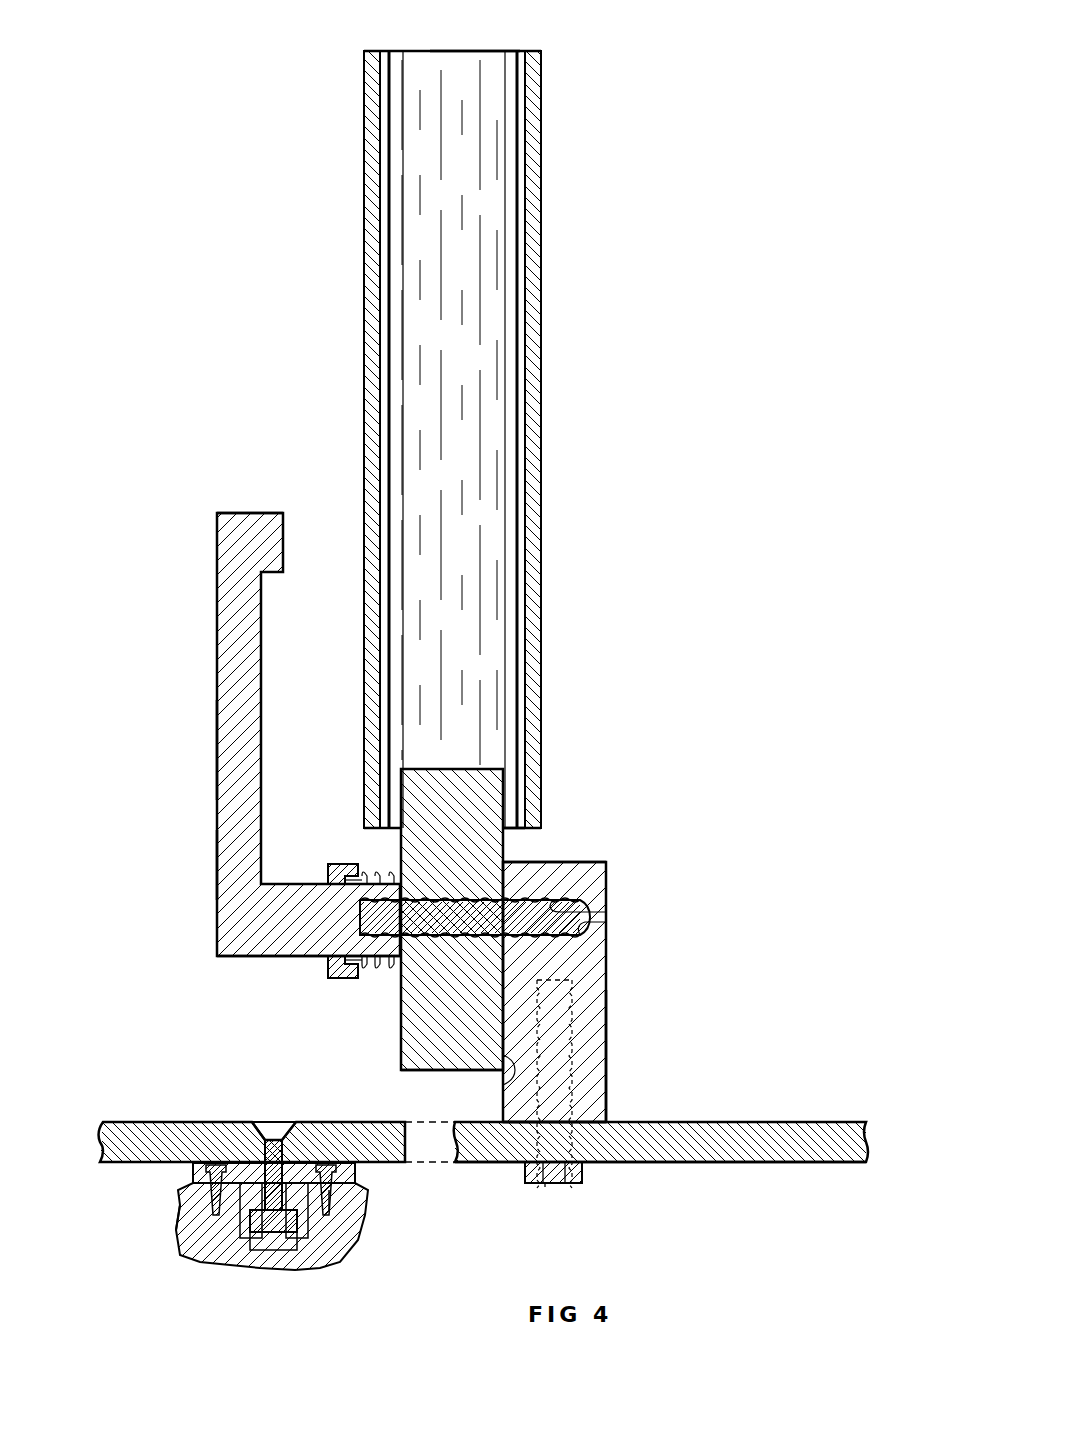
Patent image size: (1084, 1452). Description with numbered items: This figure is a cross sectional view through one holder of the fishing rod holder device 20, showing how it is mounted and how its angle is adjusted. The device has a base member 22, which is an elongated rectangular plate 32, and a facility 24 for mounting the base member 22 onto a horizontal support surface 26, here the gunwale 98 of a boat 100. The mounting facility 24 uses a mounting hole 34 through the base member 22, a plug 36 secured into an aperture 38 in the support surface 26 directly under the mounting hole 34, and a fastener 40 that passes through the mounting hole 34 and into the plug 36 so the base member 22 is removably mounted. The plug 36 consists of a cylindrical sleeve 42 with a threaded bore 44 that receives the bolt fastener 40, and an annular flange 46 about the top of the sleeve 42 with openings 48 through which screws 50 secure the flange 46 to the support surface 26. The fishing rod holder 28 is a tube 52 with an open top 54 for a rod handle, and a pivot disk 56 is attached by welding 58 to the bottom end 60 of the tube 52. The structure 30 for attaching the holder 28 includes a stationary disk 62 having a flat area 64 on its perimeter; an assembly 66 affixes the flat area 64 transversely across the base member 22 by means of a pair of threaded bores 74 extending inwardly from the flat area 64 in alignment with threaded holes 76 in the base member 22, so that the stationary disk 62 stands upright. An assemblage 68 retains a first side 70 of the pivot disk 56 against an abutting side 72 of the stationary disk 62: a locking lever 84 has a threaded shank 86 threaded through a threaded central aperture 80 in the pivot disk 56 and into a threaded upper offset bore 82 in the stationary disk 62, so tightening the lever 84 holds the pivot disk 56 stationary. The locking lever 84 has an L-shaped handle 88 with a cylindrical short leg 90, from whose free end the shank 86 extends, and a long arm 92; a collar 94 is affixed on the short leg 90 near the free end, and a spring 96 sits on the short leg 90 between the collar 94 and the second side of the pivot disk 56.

The fishing rod holder device 20 is at (288, 258).
The base member 22 is at (785, 1122).
The facility 24 is at (190, 1176).
The horizontal support surface 26 is at (356, 1180).
The fishing rod holder 28 is at (545, 313).
The structure 30 is at (607, 962).
The elongated rectangular plate 32 is at (720, 1162).
The mounting hole 34 is at (258, 1128).
The plug 36 is at (238, 1240).
The aperture 38 is at (298, 1222).
The fastener 40 is at (284, 1122).
The cylindrical sleeve 42 is at (270, 1250).
The threaded bore 44 is at (298, 1250).
The annular flange 46 is at (326, 1165).
The opening 48 is at (214, 1165).
The screw 50 is at (332, 1193).
The tube 52 is at (548, 428).
The open top 54 is at (488, 51).
The pivot disk 56 is at (507, 848).
The welding 58 is at (410, 768).
The bottom end 60 is at (528, 828).
The stationary disk 62 is at (608, 1050).
The flat area 64 is at (598, 1123).
The assembly 66 is at (585, 1173).
The assemblage 68 is at (168, 671).
The first side 70 is at (507, 1072).
The abutting side 72 is at (503, 1108).
The threaded bore 74 is at (560, 1020).
The threaded hole 76 is at (518, 1165).
The threaded central aperture 80 is at (424, 935).
The threaded upper offset bore 82 is at (606, 890).
The threaded shank 86 is at (606, 924).
The locking lever 84 is at (215, 752).
The L-shaped handle 88 is at (215, 858).
The cylindrical short leg 90 is at (232, 935).
The long arm 92 is at (222, 566).
The collar 94 is at (325, 870).
The spring 96 is at (362, 965).
The gunwale 98 is at (178, 1248).
The boat 100 is at (352, 1258).